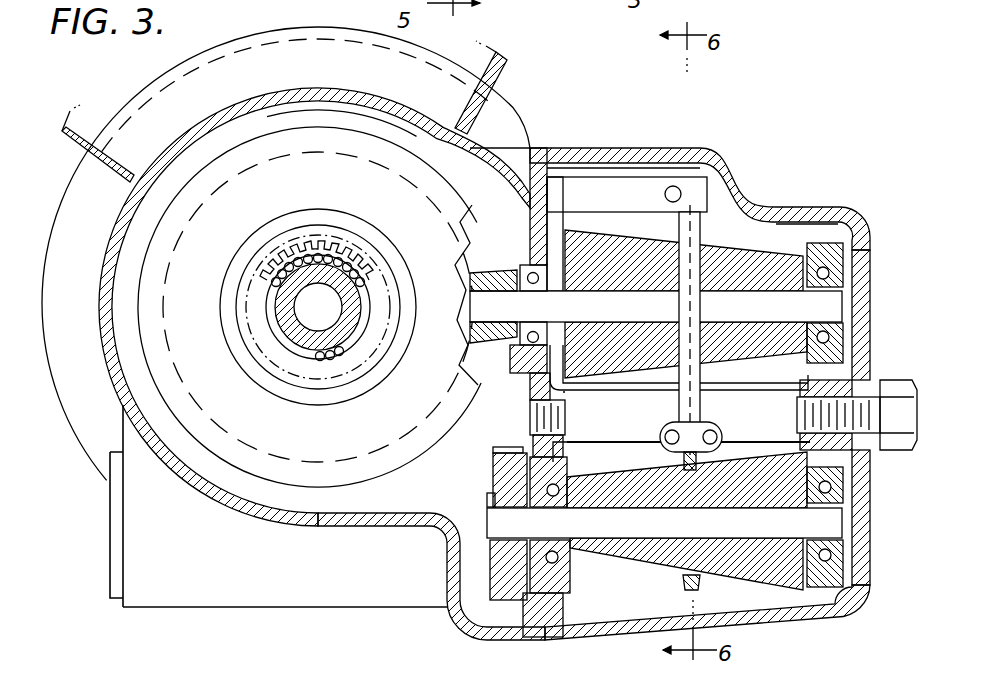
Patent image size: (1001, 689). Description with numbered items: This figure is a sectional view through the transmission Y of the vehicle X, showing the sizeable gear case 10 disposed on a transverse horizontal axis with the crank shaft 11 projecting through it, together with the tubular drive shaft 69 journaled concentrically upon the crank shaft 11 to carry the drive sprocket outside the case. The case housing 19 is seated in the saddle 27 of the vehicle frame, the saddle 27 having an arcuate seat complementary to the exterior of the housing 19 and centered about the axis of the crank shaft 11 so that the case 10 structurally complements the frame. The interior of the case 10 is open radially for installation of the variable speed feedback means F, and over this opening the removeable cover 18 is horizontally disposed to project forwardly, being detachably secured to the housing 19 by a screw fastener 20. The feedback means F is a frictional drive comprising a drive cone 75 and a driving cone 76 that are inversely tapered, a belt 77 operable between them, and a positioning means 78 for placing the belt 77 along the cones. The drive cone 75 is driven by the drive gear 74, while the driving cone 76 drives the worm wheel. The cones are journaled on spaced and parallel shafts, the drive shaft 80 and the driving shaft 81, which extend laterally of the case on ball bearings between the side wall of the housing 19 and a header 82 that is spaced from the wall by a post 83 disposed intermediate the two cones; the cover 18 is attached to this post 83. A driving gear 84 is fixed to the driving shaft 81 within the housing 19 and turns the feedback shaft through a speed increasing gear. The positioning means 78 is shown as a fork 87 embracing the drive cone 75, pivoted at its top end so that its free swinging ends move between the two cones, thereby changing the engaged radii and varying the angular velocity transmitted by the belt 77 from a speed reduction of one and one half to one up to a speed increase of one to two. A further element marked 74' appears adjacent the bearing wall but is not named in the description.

The gear case 10 is at (157, 473).
The crank shaft 11 is at (298, 288).
The removeable cover 18 is at (728, 167).
The case housing 19 is at (312, 532).
The screw fastener 20 is at (889, 382).
The saddle 27 is at (480, 112).
The tubular drive shaft 69 is at (357, 253).
The drive gear 74 is at (309, 307).
The bearing wall 74' is at (517, 302).
The drive cone 75 is at (648, 264).
The driving cone 76 is at (768, 487).
The belt 77 is at (685, 590).
The positioning means 78 is at (707, 378).
The drive shaft 80 is at (632, 310).
The driving shaft 81 is at (742, 526).
The header 82 is at (847, 230).
The post 83 is at (613, 432).
The driving gear 84 is at (503, 470).
The fork 87 is at (693, 268).
The vehicle X is at (503, 72).
The transmission Y is at (605, 147).
The feedback means F is at (772, 233).